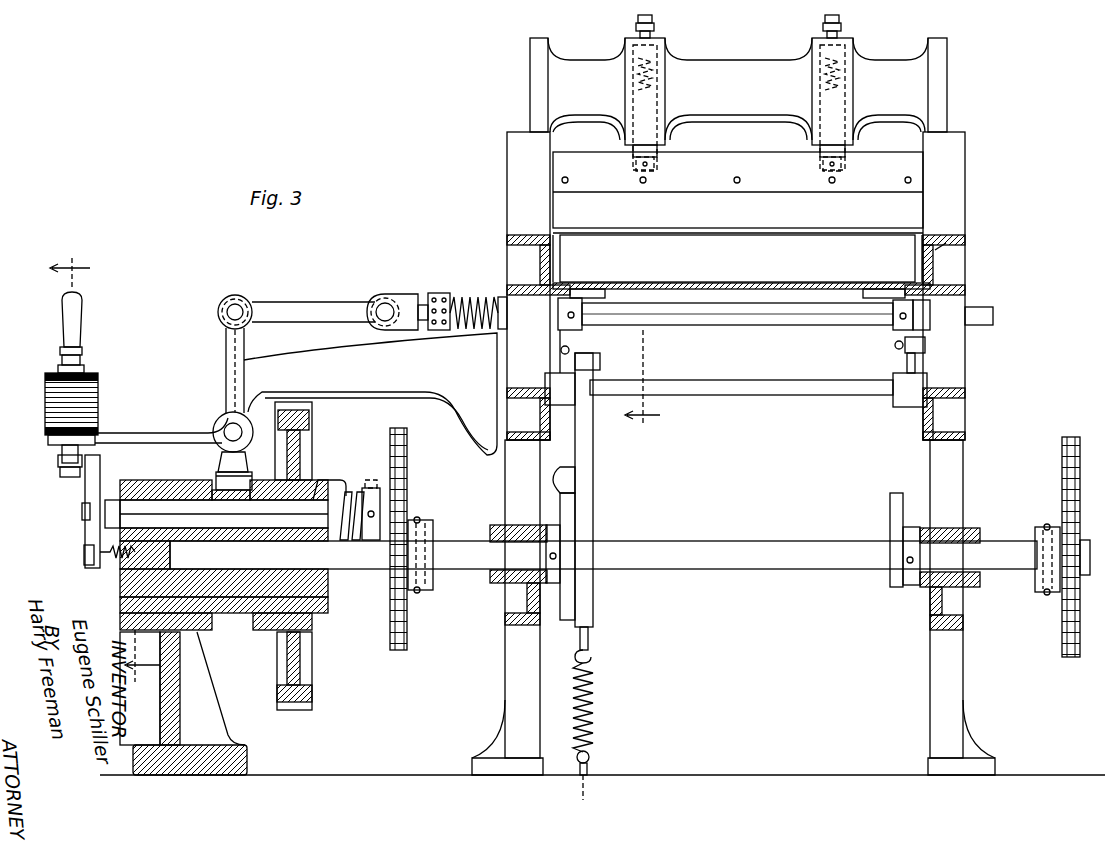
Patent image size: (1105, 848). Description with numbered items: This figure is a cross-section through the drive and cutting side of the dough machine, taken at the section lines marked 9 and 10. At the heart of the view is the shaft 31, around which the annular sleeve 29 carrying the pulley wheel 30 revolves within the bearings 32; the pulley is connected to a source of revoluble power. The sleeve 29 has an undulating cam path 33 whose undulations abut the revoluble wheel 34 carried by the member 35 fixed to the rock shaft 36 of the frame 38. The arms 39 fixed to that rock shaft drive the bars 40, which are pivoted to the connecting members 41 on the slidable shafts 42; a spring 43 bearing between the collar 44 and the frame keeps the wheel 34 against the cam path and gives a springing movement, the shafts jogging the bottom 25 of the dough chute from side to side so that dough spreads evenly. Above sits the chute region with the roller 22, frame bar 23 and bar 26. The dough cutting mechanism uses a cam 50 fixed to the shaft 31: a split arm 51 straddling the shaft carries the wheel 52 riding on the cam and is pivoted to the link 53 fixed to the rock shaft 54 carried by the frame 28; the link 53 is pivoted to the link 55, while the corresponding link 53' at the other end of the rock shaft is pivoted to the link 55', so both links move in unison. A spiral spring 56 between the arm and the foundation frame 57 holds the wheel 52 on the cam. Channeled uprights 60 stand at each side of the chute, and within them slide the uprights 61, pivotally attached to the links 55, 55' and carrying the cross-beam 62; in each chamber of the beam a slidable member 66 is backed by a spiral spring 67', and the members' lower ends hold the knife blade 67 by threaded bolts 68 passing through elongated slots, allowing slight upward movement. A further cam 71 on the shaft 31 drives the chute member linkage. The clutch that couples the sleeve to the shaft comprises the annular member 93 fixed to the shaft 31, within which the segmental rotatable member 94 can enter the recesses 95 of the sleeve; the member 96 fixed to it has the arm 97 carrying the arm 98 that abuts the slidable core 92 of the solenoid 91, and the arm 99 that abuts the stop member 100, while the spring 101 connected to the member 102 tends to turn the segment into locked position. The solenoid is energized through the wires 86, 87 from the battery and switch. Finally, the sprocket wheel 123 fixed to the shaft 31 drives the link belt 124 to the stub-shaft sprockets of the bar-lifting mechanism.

The section line 9 is at (105, 457).
The section line / clamping bolt 10 is at (634, 25).
The roller 22 is at (563, 252).
The frame bar 23 is at (946, 243).
The bottom of the dough chute portion 25 is at (708, 282).
The bar 26 is at (746, 290).
The frame 28 is at (507, 703).
The annular sleeve 29 is at (155, 494).
The pulley wheel 30 is at (312, 413).
The shaft 31 is at (450, 541).
The bearings 32 is at (492, 525).
The undulating cam path 33 is at (250, 484).
The revoluble wheel 34 is at (216, 476).
The member 35 is at (226, 457).
The rock shaft 36 is at (216, 424).
The frame 38 is at (370, 394).
The arms 39 is at (226, 362).
The bars 40 is at (311, 302).
The connecting members 41 is at (410, 294).
The shafts 42 is at (697, 318).
The spring 43 is at (472, 297).
The collar 44 is at (446, 293).
The cam 50 is at (560, 508).
The split arm 51 is at (593, 512).
The wheel 52 is at (565, 467).
The link 53 is at (577, 365).
The link 53' is at (892, 372).
The rock shaft 54 is at (757, 395).
The link 55 is at (547, 328).
The link 55' is at (951, 328).
The spiral spring 56 is at (592, 678).
The foundation frame 57 is at (600, 775).
The channeled uprights 60 is at (507, 170).
The uprights 61 is at (530, 87).
The cross-beam 62 is at (738, 70).
The slidable member 66 is at (636, 108).
The knife blade 67 is at (738, 178).
The spiral spring 67' is at (739, 104).
The threaded bolts 68 is at (650, 181).
The cam 71 is at (893, 590).
The wire 86 is at (28, 378).
The wire 87 is at (28, 438).
The solenoid 91 is at (98, 392).
The slidable core 92 is at (60, 458).
The annular member 93 is at (125, 594).
The segmental rotatable member 94 is at (208, 520).
The recesses 95 is at (318, 490).
The member 96 is at (85, 513).
The arm 97 is at (88, 488).
The arm 98 is at (68, 472).
The arm 99 is at (88, 548).
The stop member 100 is at (110, 563).
The spring 101 is at (346, 492).
The member 102 is at (373, 480).
The sprocket wheel 123 is at (428, 592).
The link belt 124 is at (407, 455).